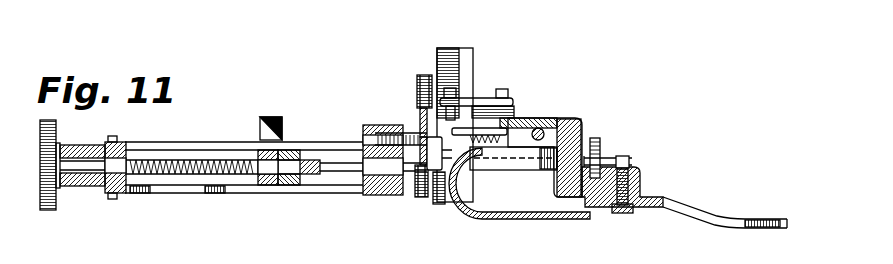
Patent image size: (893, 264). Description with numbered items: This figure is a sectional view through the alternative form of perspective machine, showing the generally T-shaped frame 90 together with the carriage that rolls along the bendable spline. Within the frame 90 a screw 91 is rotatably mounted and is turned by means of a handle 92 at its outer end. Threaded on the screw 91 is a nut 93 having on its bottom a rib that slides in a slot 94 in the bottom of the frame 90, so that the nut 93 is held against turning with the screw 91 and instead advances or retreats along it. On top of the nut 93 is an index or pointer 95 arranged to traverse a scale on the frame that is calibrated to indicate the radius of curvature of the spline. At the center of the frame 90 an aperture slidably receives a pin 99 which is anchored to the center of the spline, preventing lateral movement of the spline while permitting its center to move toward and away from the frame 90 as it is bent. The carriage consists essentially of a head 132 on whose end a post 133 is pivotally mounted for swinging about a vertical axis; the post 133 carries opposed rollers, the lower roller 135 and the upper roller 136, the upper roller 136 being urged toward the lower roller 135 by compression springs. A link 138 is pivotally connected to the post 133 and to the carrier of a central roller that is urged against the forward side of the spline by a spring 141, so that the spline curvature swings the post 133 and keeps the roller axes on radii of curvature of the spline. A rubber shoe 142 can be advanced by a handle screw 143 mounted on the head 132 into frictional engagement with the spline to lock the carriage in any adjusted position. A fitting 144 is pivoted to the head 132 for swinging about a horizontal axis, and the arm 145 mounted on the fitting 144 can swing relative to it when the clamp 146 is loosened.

The frame 90 is at (170, 142).
The screw 91 is at (302, 174).
The handle 92 is at (50, 132).
The nut 93 is at (280, 193).
The slot 94 is at (183, 188).
The index or pointer 95 is at (280, 127).
The pin 99 is at (412, 133).
The head 132 is at (602, 147).
The post 133 is at (477, 37).
The lower roller 135 is at (417, 196).
The upper roller 136 is at (425, 75).
The link 138 is at (480, 96).
The spring 141 is at (480, 135).
The rubber shoe 142 is at (443, 204).
The handle screw 143 is at (588, 150).
The fitting 144 is at (568, 116).
The arm 145 is at (667, 196).
The clamp 146 is at (623, 158).